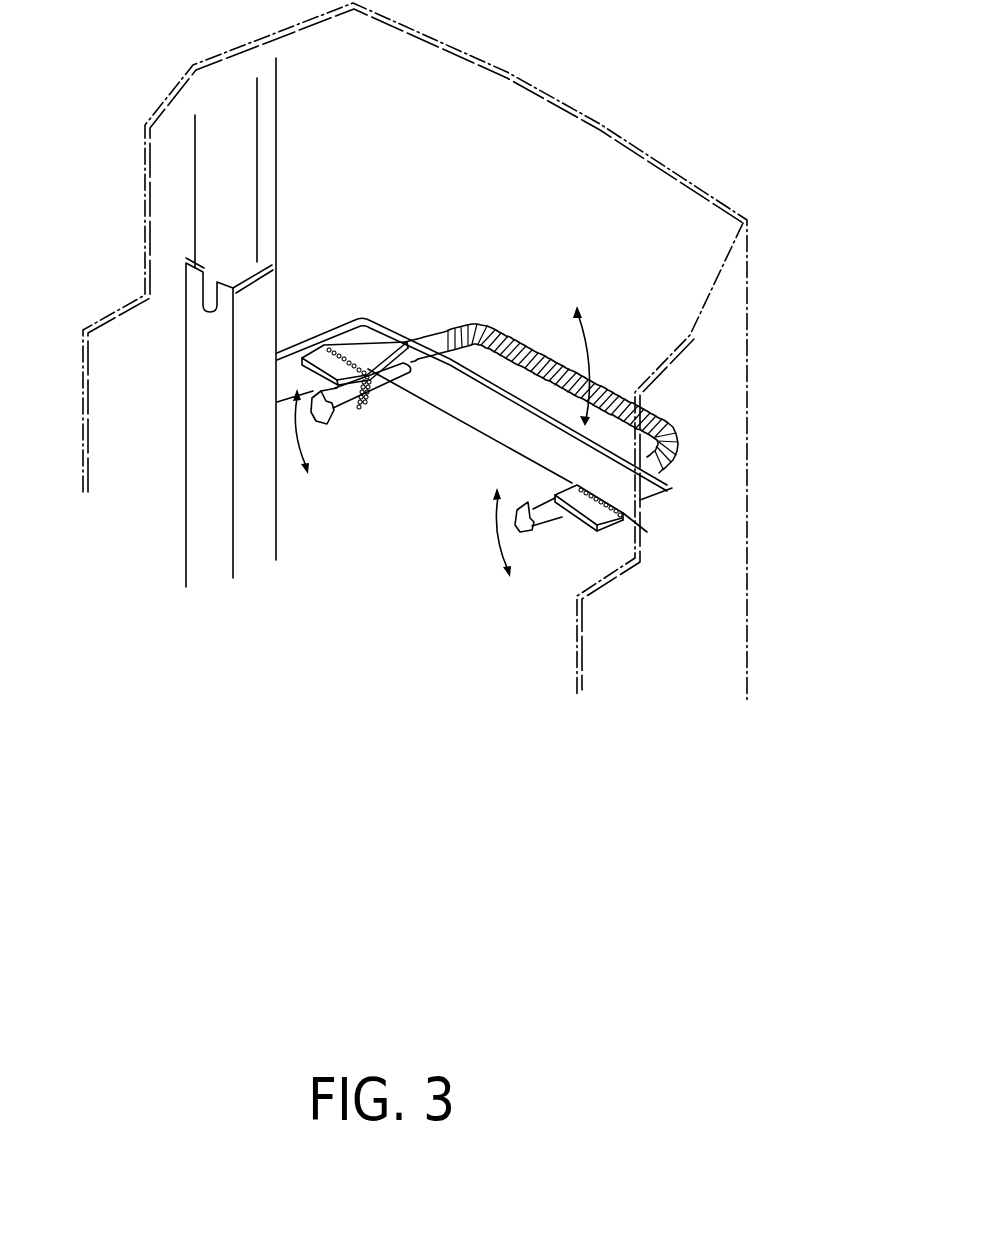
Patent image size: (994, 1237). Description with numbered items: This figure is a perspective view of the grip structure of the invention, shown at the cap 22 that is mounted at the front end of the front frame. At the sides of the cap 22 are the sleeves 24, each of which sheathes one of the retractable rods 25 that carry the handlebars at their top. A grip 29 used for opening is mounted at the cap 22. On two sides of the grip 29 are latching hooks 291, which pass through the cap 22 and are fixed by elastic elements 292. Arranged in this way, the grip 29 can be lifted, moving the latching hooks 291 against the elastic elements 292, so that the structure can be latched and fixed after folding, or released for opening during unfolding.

The cap 22 is at (737, 578).
The sleeve 24 is at (197, 543).
The retractable rod 25 is at (210, 204).
The grip 29 is at (653, 410).
The latching hook 291 is at (337, 410).
The elastic element 292 is at (360, 407).